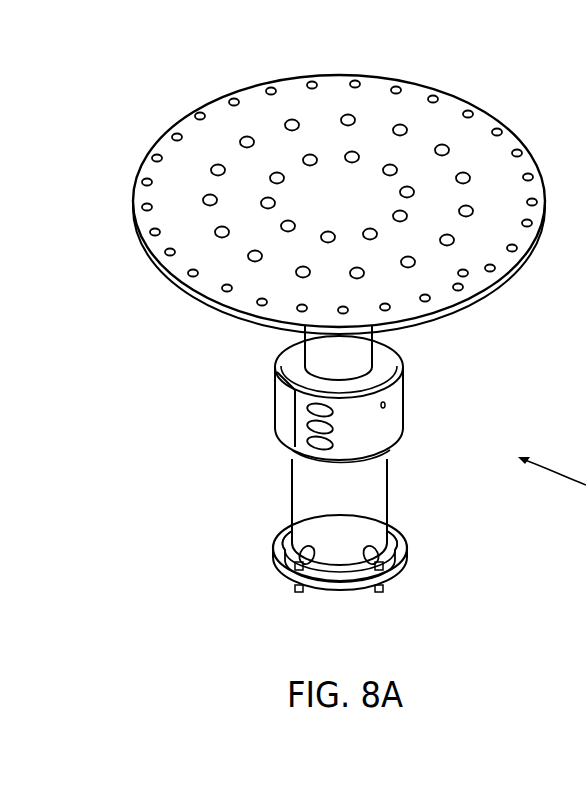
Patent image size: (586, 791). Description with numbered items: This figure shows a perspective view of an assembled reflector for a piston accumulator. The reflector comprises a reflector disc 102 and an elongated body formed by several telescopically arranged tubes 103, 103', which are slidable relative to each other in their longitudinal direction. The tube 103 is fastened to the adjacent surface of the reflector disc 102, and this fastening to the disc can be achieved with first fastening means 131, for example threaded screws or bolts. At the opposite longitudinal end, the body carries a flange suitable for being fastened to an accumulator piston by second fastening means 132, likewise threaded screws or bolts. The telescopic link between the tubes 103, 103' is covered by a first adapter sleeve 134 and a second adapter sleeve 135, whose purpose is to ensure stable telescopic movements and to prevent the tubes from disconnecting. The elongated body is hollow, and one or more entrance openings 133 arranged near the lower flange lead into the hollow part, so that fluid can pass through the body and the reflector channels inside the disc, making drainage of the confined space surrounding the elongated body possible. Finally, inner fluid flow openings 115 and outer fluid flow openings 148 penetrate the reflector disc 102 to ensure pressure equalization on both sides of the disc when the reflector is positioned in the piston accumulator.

The reflector disc 102 is at (432, 88).
The outer fluid flow openings 148 is at (200, 117).
The first fastening means 131 is at (308, 158).
The inner fluid flow openings 115 is at (450, 149).
The tube 103 is at (338, 353).
The first adapter sleeve 134 is at (405, 392).
The second adapter sleeve 135 is at (275, 392).
The tube 103' is at (339, 512).
The second fastening means 132 is at (385, 588).
The entrance openings 133 is at (307, 563).